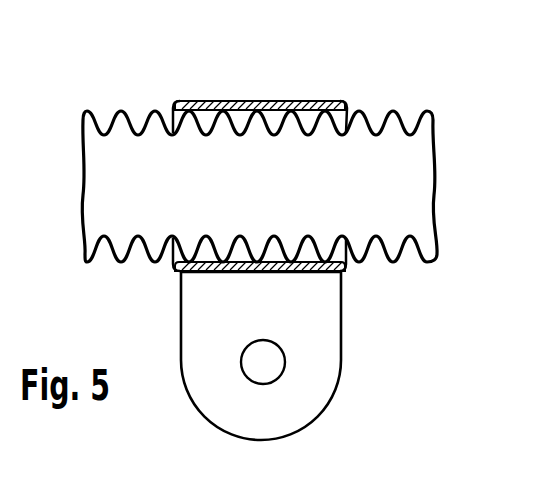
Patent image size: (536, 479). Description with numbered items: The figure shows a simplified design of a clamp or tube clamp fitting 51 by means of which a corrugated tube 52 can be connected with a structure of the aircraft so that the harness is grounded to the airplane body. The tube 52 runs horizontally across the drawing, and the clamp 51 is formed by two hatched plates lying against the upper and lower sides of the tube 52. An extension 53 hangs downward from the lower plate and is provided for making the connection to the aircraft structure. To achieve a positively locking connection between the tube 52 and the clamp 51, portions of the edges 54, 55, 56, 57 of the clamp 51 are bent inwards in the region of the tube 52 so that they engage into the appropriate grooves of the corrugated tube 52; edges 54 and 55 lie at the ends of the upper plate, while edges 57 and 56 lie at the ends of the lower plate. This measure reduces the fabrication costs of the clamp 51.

The tube clamp fitting 51 is at (320, 76).
The tube 52 is at (119, 105).
The extension 53 is at (313, 385).
The edge 54 is at (168, 104).
The edge 55 is at (350, 106).
The edge 56 is at (354, 264).
The edge 57 is at (166, 266).